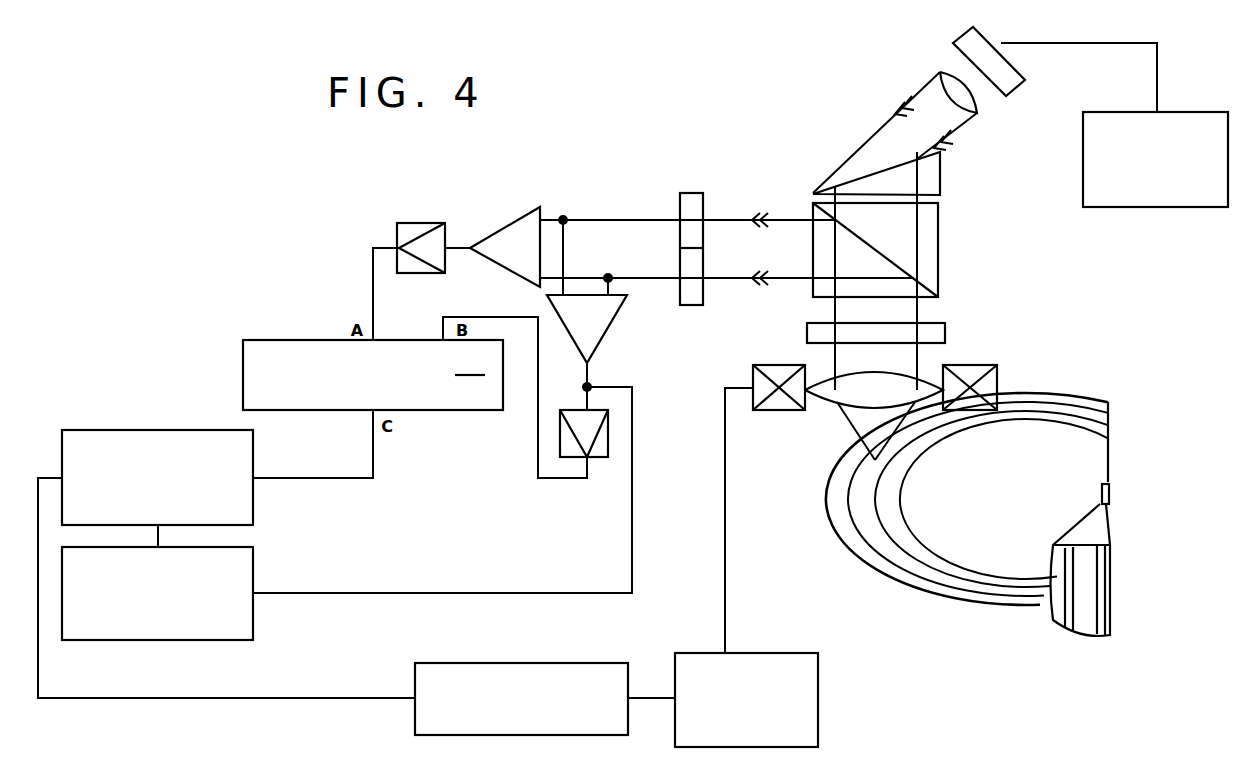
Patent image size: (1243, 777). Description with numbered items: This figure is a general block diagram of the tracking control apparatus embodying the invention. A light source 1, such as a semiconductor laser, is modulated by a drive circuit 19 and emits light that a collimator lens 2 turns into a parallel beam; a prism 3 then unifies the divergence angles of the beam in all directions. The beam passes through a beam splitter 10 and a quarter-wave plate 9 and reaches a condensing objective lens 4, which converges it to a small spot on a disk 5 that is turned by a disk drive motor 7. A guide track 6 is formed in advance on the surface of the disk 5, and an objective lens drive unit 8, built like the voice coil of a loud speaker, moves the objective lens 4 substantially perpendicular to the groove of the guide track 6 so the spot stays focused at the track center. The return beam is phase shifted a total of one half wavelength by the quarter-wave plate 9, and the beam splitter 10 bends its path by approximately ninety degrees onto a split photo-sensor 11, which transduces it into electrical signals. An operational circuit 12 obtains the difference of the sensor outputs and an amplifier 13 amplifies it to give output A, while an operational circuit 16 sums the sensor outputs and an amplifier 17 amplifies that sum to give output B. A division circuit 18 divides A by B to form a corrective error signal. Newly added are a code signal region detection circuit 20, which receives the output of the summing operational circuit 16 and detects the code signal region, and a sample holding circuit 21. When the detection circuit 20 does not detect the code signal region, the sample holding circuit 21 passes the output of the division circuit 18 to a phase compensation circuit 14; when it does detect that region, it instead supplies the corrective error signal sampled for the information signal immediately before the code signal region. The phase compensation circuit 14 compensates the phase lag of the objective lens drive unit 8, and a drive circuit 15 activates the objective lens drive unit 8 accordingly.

The light source 1 is at (958, 45).
The collimator lens 2 is at (932, 76).
The prism 3 is at (940, 175).
The condensing objective lens 4 is at (835, 405).
The disk-type recording medium 5 is at (1050, 402).
The guide track 6 is at (1087, 408).
The disk drive motor 7 is at (1075, 620).
The objective lens drive unit 8 is at (782, 412).
The quarter-wave plate 9 is at (945, 335).
The beam splitter 10 is at (940, 250).
The split photo-sensor 11 is at (692, 191).
The operational circuit 12 is at (506, 223).
The amplifier 13 is at (397, 232).
The phase compensation circuit 14 is at (565, 662).
The drive circuit 15 is at (818, 705).
The operational circuit 16 is at (628, 330).
The amplifier 17 is at (602, 458).
The division circuit 18 is at (295, 338).
The drive circuit 19 is at (1095, 208).
The code signal region detection circuit 20 is at (250, 560).
The sample holding circuit 21 is at (150, 428).